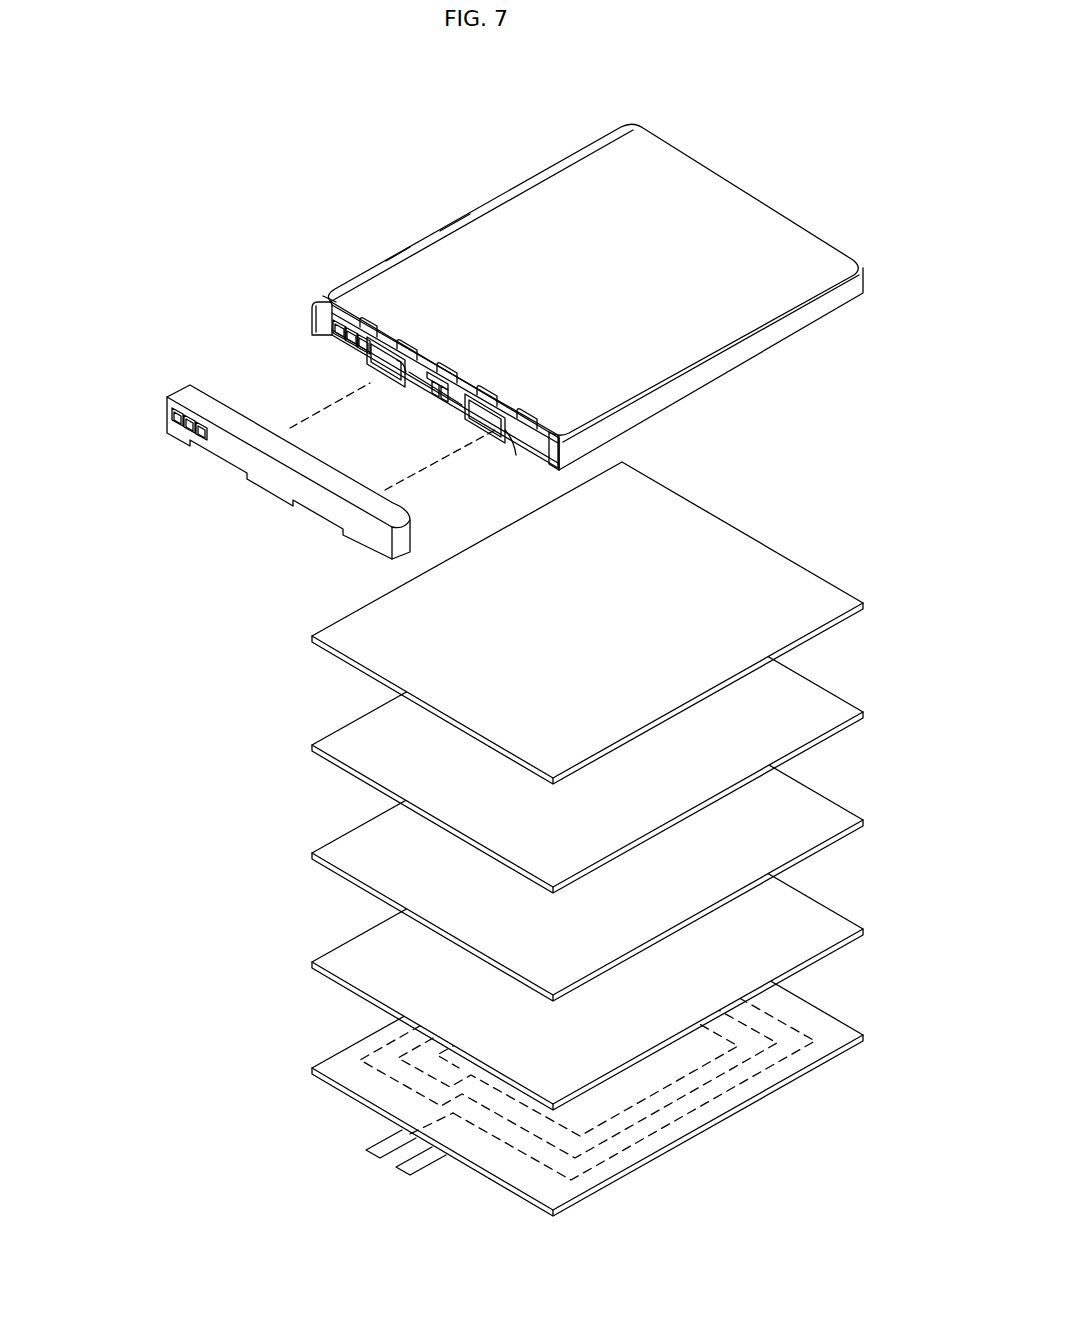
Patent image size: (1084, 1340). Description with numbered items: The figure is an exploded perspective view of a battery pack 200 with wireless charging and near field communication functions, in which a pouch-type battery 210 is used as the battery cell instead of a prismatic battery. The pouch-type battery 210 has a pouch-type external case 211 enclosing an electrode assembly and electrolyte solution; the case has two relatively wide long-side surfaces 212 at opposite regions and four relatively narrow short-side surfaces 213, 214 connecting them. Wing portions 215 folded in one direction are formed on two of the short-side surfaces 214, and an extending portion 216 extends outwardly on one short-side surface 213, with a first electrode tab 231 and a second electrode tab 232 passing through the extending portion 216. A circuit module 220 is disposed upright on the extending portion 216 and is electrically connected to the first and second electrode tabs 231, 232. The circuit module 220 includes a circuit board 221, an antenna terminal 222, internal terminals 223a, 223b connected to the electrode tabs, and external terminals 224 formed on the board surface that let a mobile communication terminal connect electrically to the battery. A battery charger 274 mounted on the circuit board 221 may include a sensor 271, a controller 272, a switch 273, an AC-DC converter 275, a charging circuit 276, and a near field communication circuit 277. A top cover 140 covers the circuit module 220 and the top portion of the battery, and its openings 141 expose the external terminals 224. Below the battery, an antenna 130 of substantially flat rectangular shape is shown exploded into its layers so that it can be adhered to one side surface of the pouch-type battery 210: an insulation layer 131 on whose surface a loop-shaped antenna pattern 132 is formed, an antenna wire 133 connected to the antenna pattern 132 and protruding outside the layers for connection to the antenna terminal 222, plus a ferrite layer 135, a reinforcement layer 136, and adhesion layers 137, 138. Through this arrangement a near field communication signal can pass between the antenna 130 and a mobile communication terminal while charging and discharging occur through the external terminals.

The battery pack 200 is at (153, 157).
The pouch-type battery 210 is at (556, 185).
The pouch-type external case 211 is at (316, 166).
The long-side surfaces 212 is at (470, 238).
The short-side surface 213 is at (340, 298).
The short-side surfaces 214 is at (398, 256).
The wing portions 215 is at (748, 355).
The extending portion 216 is at (310, 326).
The circuit module 220 is at (320, 295).
The circuit board 221 is at (565, 452).
The antenna terminal 222 is at (442, 404).
The internal terminal 223a is at (394, 380).
The internal terminal 223b is at (512, 462).
The external terminals 224 is at (358, 349).
The first electrode tab 231 is at (370, 362).
The second electrode tab 232 is at (492, 442).
The sensor 271 is at (432, 398).
The controller 272 is at (376, 322).
The switch 273 is at (410, 344).
The battery charger 274 is at (562, 302).
The AC-DC converter 275 is at (452, 368).
The charging circuit 276 is at (492, 392).
The near field communication circuit 277 is at (540, 414).
The top cover 140 is at (228, 484).
The openings 141 is at (170, 418).
The antenna 130 is at (252, 855).
The insulation layer 131 is at (583, 1190).
The antenna pattern 132 is at (520, 1170).
The antenna wire 133 is at (372, 1155).
The ferrite layer 135 is at (318, 852).
The reinforcement layer 136 is at (318, 744).
The adhesion layer 137 is at (318, 961).
The adhesion layer 138 is at (318, 634).